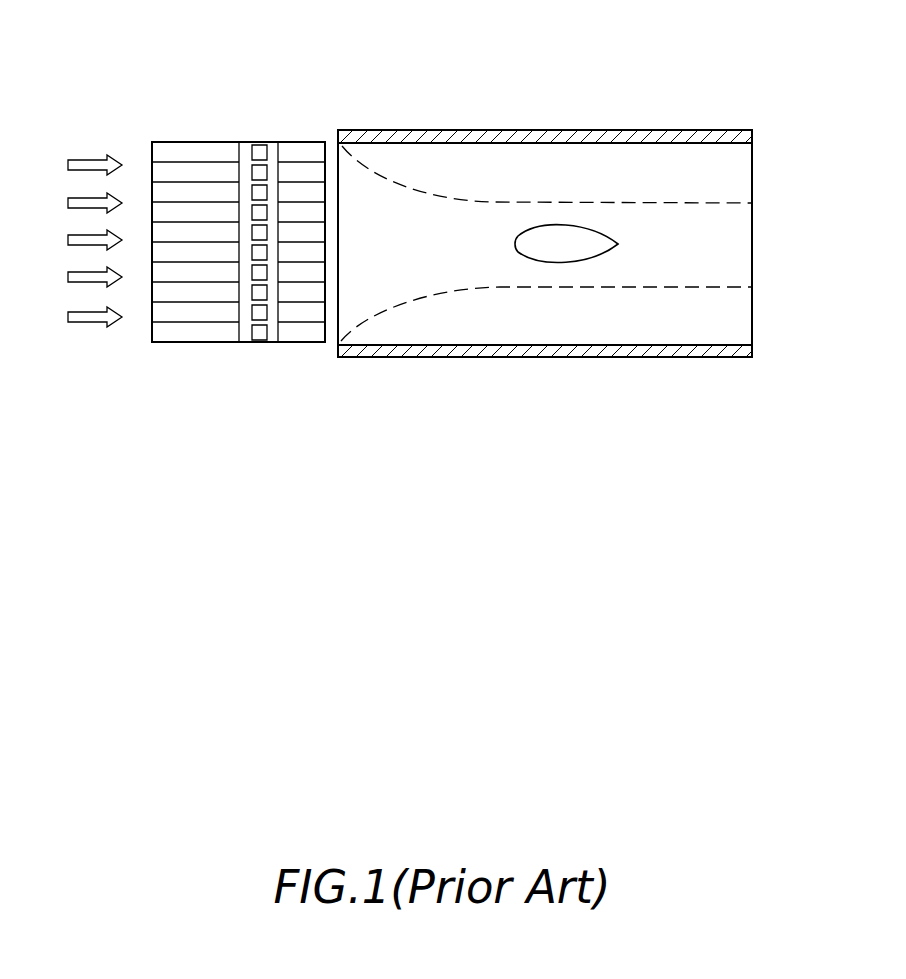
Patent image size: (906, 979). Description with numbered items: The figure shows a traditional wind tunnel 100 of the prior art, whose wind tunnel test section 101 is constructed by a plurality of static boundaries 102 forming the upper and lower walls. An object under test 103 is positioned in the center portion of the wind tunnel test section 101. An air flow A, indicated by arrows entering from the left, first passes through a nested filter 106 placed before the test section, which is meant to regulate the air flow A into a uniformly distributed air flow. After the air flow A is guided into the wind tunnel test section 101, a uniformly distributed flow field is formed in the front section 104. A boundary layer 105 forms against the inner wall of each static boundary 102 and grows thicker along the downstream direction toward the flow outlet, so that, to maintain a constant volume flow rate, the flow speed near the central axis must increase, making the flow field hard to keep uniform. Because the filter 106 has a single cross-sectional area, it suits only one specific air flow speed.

The traditional wind tunnel 100 is at (557, 226).
The wind tunnel test section 101 is at (353, 373).
The static boundary 102 is at (713, 137).
The object under test 103 is at (550, 237).
The front section 104 is at (383, 233).
The boundary layer 105 is at (620, 205).
The nested filter 106 is at (187, 148).
The air flow A is at (88, 160).